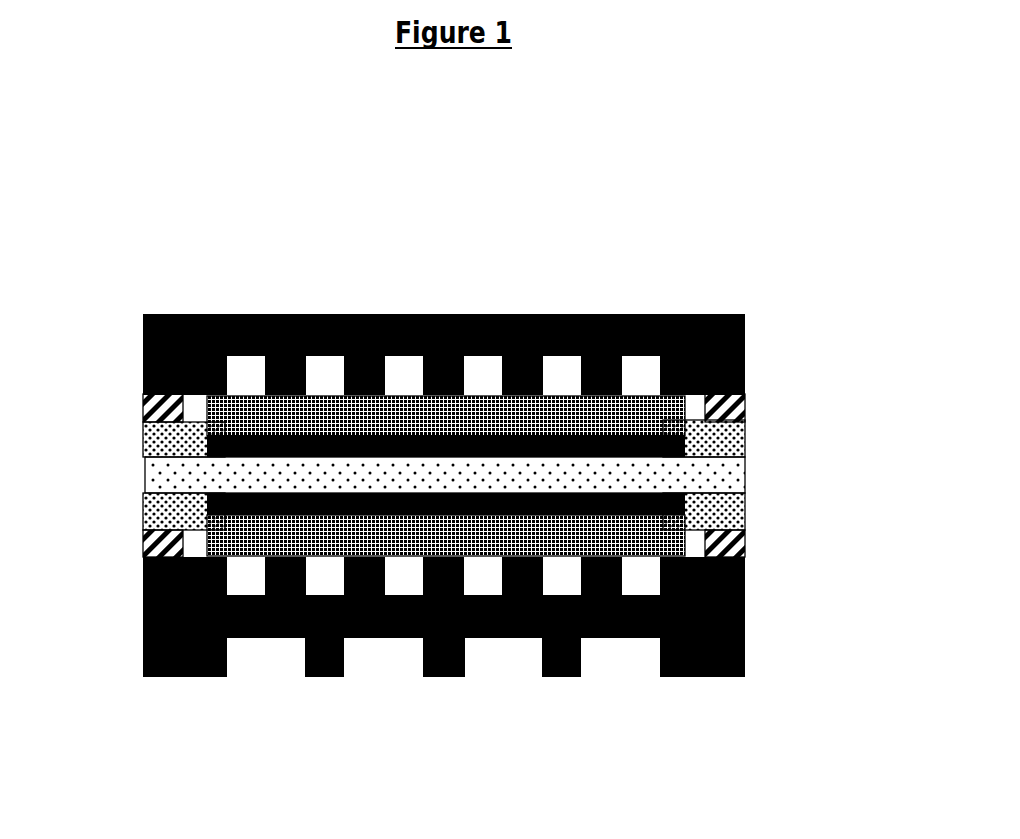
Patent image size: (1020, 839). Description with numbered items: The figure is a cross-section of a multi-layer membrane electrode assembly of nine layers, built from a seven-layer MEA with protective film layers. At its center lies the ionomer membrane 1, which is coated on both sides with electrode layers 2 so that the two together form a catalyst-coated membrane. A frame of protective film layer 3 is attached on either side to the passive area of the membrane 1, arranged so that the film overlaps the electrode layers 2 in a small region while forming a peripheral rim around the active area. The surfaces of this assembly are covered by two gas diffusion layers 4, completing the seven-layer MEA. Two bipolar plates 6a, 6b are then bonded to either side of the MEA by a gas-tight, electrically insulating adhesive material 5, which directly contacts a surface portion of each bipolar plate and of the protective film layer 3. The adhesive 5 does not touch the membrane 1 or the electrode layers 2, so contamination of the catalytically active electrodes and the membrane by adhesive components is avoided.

The ionomer membrane 1 is at (165, 478).
The electrode layers 2 is at (678, 433).
The protective film layer 3 is at (730, 440).
The gas diffusion layers 4 is at (446, 476).
The adhesive material 5 is at (745, 405).
The bipolar plate 6a is at (444, 314).
The bipolar plate 6b is at (443, 677).